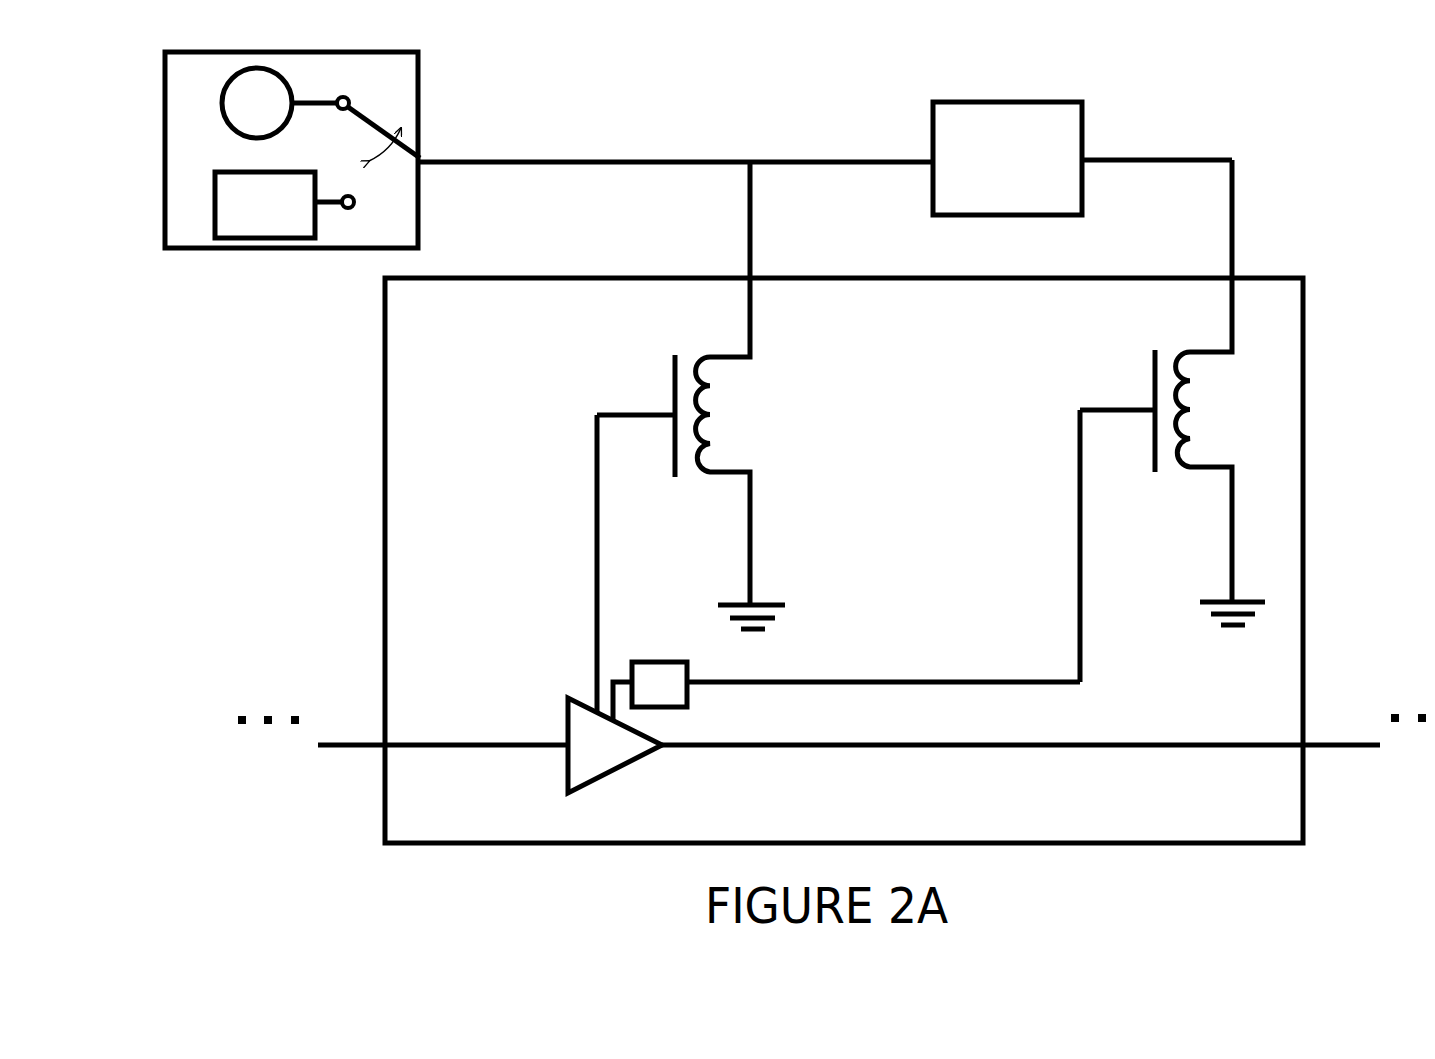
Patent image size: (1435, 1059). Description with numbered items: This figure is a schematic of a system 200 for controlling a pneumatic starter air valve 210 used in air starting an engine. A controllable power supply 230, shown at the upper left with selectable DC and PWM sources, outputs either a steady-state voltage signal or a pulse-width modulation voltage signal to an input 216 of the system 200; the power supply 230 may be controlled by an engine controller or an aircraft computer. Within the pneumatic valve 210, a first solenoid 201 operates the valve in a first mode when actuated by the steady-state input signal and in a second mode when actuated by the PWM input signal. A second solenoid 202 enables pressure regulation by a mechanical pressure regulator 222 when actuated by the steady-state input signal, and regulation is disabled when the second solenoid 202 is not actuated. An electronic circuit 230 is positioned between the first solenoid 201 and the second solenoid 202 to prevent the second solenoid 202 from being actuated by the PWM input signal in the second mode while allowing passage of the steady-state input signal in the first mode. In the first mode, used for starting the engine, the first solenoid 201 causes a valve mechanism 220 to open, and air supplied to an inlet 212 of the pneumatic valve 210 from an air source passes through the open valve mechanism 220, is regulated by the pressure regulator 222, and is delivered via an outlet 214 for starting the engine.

The system 200 is at (577, 46).
The first solenoid 201 is at (697, 340).
The second solenoid 202 is at (1168, 333).
The pneumatic starter air valve 210 is at (708, 278).
The inlet 212 is at (353, 748).
The outlet 214 is at (1343, 747).
The input 216 is at (450, 163).
The valve mechanism 220 is at (568, 698).
The mechanical pressure regulator 222 is at (683, 662).
The controllable power supply / electronic circuit 230 is at (188, 50).